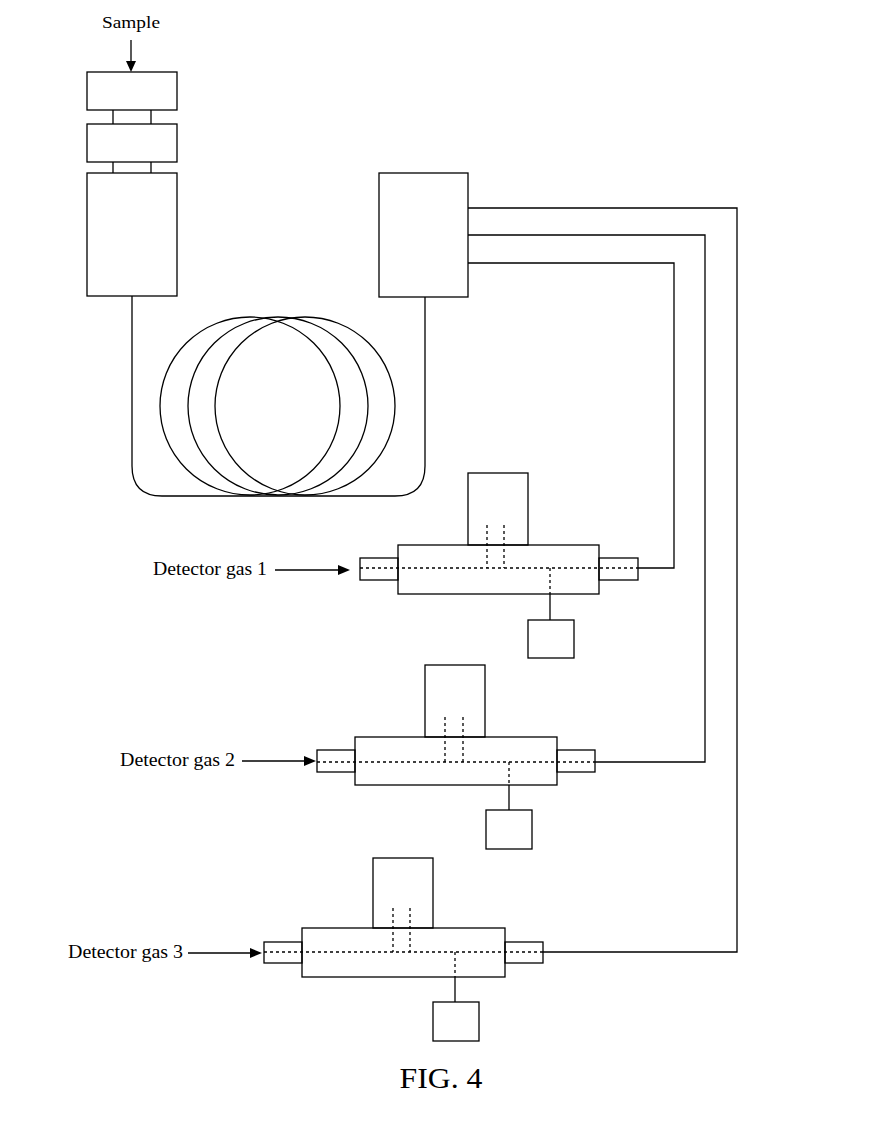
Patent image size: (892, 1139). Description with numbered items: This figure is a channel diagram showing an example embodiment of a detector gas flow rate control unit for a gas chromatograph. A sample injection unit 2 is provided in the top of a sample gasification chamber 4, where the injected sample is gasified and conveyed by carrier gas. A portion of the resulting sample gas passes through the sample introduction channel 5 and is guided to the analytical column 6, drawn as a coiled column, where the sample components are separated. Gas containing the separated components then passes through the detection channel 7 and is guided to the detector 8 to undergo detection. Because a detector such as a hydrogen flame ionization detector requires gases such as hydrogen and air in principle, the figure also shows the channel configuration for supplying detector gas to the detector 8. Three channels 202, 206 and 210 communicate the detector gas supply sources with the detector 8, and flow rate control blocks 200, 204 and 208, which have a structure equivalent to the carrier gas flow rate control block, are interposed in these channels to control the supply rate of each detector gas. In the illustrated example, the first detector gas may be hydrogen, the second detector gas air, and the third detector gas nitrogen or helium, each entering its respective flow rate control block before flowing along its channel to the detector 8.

The sample injection unit 2 is at (177, 72).
The sample gasification chamber 4 is at (177, 190).
The sample introduction channel 5 is at (132, 337).
The analytical column 6 is at (277, 317).
The detection channel 7 is at (425, 337).
The detector 8 is at (468, 173).
The flow rate control block 200 is at (543, 525).
The channel 202 is at (674, 405).
The flow rate control block 204 is at (497, 725).
The channel 206 is at (705, 433).
The flow rate control block 208 is at (440, 907).
The channel 210 is at (737, 475).